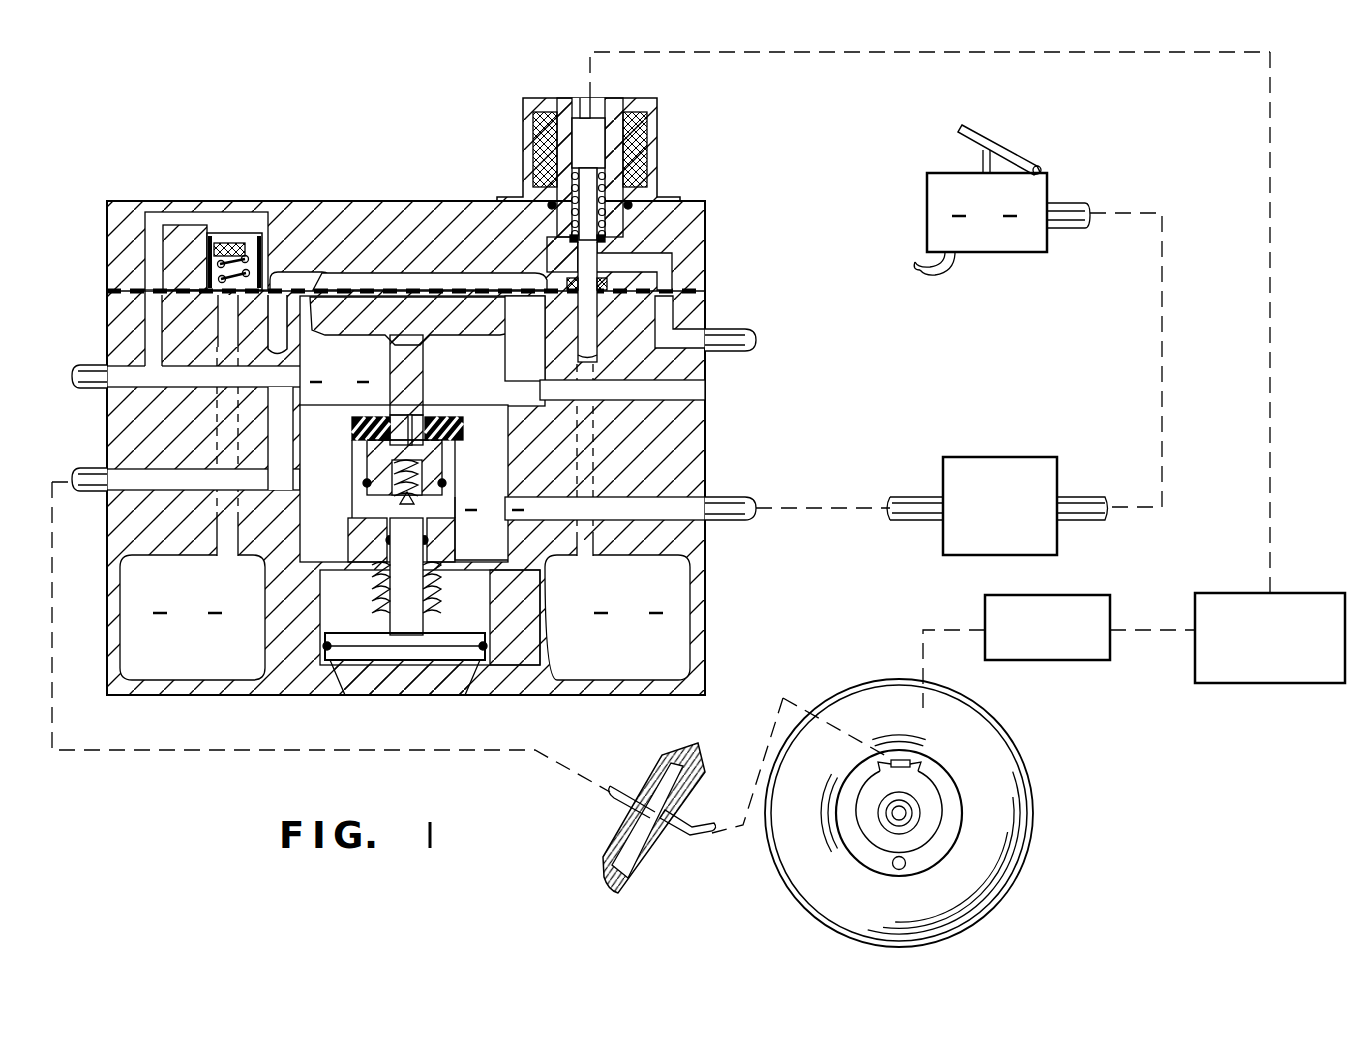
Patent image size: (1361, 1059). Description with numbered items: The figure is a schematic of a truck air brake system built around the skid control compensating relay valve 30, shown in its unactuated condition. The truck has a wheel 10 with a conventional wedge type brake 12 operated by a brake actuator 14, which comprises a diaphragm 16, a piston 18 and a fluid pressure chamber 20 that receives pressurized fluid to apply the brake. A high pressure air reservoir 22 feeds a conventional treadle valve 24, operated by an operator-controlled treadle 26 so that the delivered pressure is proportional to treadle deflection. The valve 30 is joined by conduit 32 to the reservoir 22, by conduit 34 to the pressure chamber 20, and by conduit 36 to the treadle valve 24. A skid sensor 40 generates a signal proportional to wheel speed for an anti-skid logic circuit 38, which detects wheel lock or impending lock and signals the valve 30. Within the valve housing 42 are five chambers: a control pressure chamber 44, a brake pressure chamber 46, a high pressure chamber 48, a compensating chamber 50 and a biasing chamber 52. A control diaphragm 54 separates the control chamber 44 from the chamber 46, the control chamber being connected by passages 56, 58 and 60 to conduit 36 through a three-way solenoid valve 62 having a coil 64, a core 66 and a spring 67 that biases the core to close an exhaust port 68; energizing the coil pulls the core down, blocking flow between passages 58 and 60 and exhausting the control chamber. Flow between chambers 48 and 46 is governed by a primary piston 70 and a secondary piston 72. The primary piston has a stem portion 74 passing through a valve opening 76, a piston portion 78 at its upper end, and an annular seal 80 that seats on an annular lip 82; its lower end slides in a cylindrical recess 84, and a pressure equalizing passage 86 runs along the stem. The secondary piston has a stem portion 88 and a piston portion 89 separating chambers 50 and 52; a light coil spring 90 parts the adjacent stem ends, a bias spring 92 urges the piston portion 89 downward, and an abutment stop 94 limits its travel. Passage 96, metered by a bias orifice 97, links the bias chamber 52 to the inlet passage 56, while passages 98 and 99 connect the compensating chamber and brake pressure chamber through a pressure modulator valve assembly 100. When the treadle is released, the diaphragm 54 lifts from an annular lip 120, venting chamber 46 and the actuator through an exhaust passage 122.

The wheel 10 is at (1032, 813).
The wedge type brake 12 is at (935, 784).
The brake actuator 14 is at (700, 759).
The diaphragm 16 is at (695, 803).
The piston 18 is at (705, 846).
The fluid pressure chamber 20 is at (652, 771).
The high pressure air reservoir 22 is at (1010, 457).
The treadle valve 24 is at (1002, 212).
The treadle 26 is at (1005, 147).
The skid control compensating relay valve 30 is at (360, 187).
The conduit 32 is at (748, 501).
The conduit 34 is at (82, 468).
The conduit 36 is at (720, 328).
The anti-skid logic circuit 38 is at (1296, 593).
The skid sensor 40 is at (1088, 595).
The valve housing 42 is at (705, 548).
The control pressure chamber 44 is at (494, 277).
The brake pressure chamber 46 is at (422, 429).
The high pressure chamber 48 is at (580, 528).
The compensating chamber 50 is at (192, 600).
The biasing chamber 52 is at (617, 610).
The control diaphragm 54 is at (398, 290).
The passage 56 is at (660, 266).
The passage 58 is at (598, 254).
The passage 60 is at (538, 243).
The three-way solenoid valve 62 is at (674, 155).
The coil 64 is at (533, 148).
The core 66 is at (598, 126).
The spring 67 is at (625, 206).
The exhaust port 68 is at (580, 107).
The primary piston 70 is at (438, 369).
The secondary piston 72 is at (440, 549).
The stem portion 74 is at (430, 401).
The valve opening 76 is at (352, 425).
The piston portion 78 is at (414, 294).
The annular seal 80 is at (455, 459).
The annular lip 82 is at (462, 425).
The cylindrical recess 84 is at (364, 487).
The pressure equalizing passage 86 is at (375, 449).
The stem portion 88 is at (405, 584).
The piston portion 89 is at (470, 641).
The light coil spring 90 is at (440, 475).
The bias spring 92 is at (372, 595).
The abutment stop 94 is at (402, 665).
The passage 96 is at (580, 470).
The bias orifice 97 is at (604, 298).
The passage 98 is at (205, 454).
The passage 99 is at (152, 327).
The pressure modulator valve assembly 100 is at (270, 265).
The annular lip 120 is at (326, 287).
The exhaust passage 122 is at (305, 351).